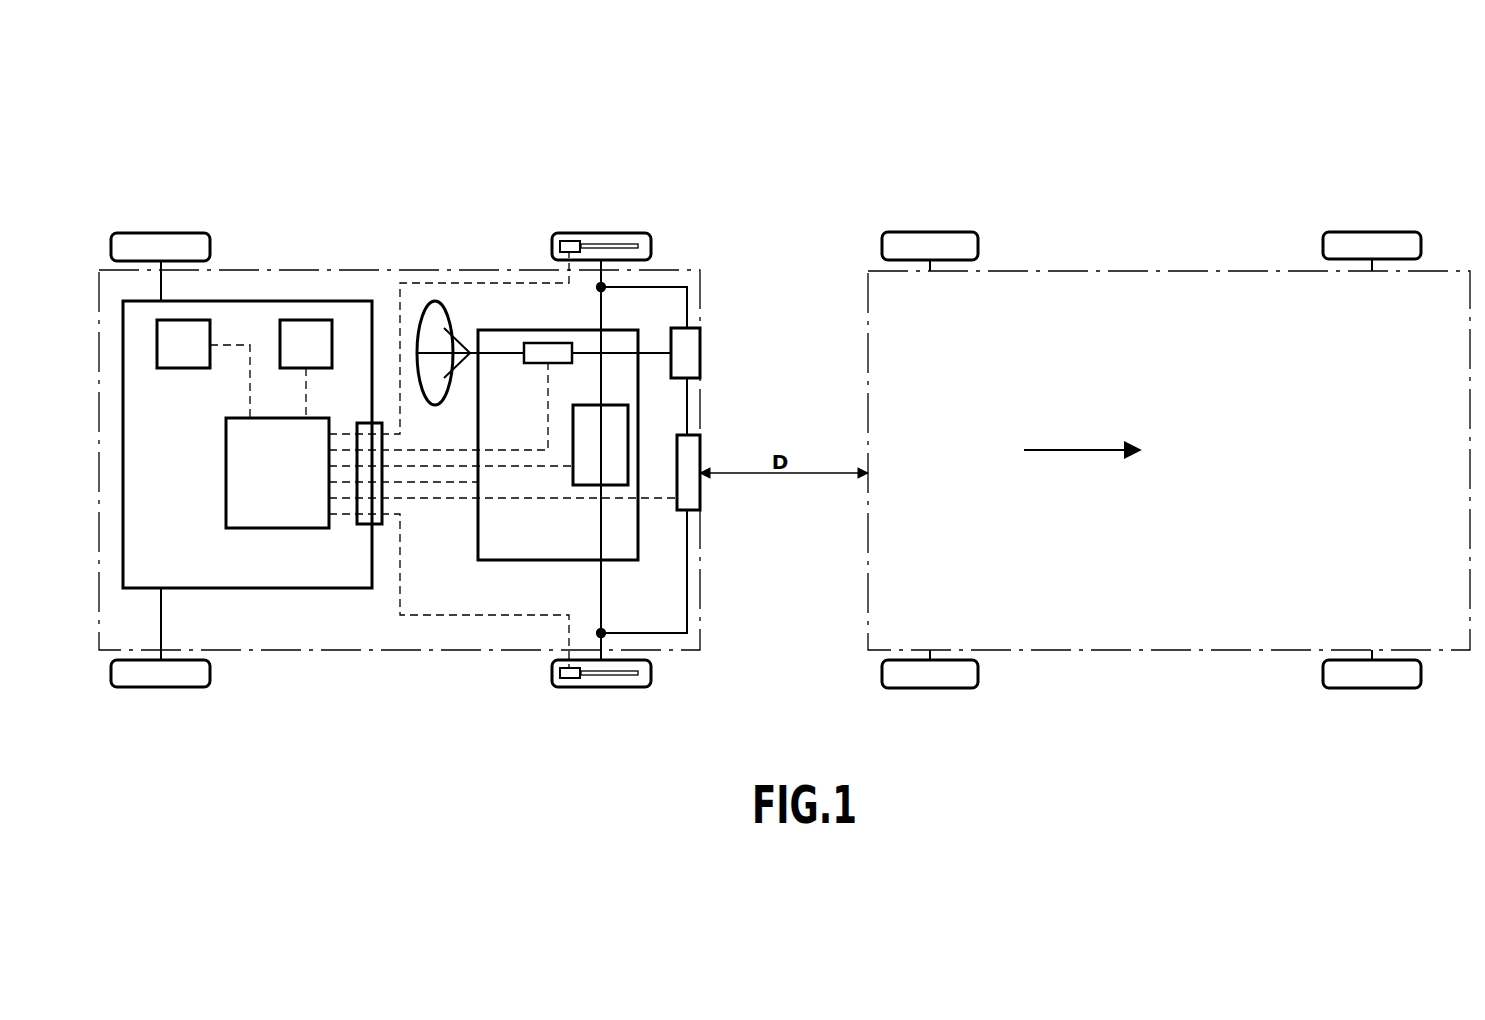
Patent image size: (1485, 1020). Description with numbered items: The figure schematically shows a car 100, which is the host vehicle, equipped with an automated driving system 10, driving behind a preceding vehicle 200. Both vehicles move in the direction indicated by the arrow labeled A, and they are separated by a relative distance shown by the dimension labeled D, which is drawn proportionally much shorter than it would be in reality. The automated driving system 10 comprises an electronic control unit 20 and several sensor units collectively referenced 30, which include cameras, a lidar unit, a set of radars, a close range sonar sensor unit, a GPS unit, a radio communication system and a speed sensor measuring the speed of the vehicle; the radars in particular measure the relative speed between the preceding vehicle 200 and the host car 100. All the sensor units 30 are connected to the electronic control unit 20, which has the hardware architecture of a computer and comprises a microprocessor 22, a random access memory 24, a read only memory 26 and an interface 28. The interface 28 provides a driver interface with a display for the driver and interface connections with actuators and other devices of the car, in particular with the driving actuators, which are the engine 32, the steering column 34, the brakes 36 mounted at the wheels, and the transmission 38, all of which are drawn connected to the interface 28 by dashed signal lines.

The car 100 is at (301, 130).
The automated driving system 10 is at (340, 252).
The electronic control unit 20 is at (250, 301).
The microprocessor 22 is at (266, 484).
The random access memory 24 is at (172, 357).
The read only memory 26 is at (295, 357).
The interface 28 is at (360, 423).
The sensor units 30 is at (700, 498).
The engine 32 is at (537, 542).
The steering column 34 is at (535, 363).
The brakes 36 is at (570, 241).
The transmission 38 is at (589, 457).
The preceding vehicle 200 is at (1002, 200).